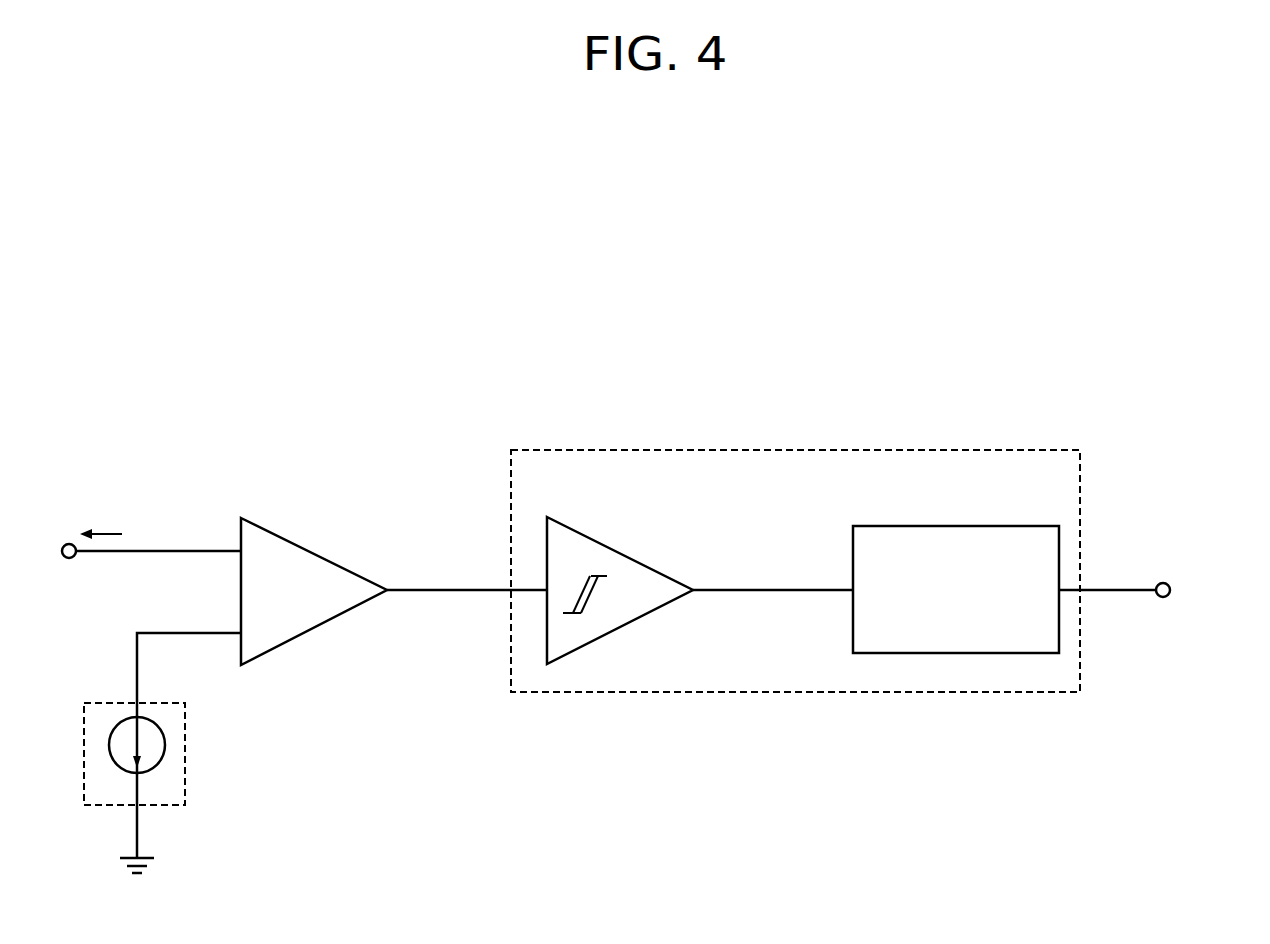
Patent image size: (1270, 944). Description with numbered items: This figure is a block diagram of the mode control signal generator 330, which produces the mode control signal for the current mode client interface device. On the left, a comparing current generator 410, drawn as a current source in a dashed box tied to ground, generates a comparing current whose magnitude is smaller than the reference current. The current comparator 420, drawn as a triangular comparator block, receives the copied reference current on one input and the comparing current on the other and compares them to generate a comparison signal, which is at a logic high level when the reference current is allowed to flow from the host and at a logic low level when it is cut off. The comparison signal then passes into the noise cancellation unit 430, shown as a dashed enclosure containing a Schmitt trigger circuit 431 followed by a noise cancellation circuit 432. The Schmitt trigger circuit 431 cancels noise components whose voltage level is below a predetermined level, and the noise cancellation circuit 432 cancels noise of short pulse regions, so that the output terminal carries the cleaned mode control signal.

The mode control signal generator 330 is at (623, 308).
The comparing current generator 410 is at (186, 752).
The current comparator 420 is at (316, 550).
The noise cancellation unit 430 is at (797, 450).
The Schmitt trigger circuit 431 is at (623, 548).
The noise cancellation circuit 432 is at (957, 526).